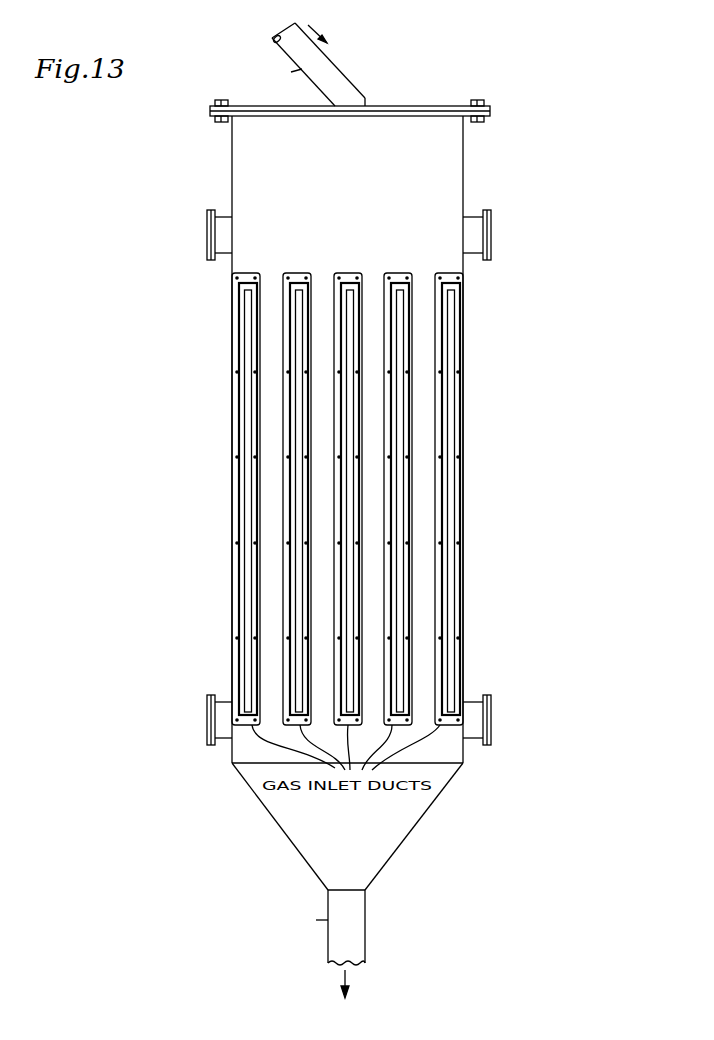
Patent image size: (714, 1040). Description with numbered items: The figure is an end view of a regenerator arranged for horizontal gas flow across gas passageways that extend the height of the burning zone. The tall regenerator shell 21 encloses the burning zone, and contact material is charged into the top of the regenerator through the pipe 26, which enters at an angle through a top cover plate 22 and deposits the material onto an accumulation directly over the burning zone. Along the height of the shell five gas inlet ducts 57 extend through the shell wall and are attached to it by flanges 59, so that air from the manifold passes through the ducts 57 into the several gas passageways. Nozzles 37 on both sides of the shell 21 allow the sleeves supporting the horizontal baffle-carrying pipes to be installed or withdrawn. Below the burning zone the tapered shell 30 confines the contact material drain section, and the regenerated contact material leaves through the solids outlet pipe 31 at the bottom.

The regenerator shell 21 is at (465, 150).
The top flange cover 22 is at (440, 106).
The pipe 26 is at (323, 63).
The nozzles 37 is at (231, 212).
The flanges 59 is at (312, 273).
The ducts 57 is at (290, 518).
The shell 30 is at (288, 840).
The pipe 31 is at (365, 927).